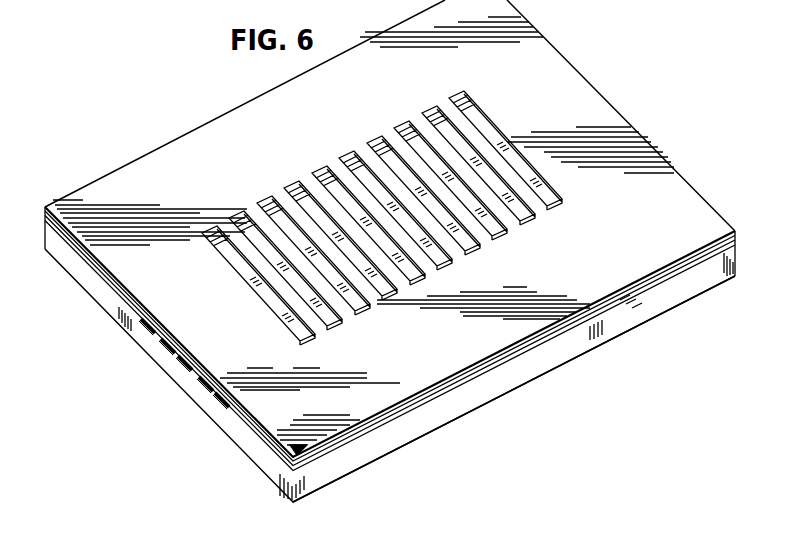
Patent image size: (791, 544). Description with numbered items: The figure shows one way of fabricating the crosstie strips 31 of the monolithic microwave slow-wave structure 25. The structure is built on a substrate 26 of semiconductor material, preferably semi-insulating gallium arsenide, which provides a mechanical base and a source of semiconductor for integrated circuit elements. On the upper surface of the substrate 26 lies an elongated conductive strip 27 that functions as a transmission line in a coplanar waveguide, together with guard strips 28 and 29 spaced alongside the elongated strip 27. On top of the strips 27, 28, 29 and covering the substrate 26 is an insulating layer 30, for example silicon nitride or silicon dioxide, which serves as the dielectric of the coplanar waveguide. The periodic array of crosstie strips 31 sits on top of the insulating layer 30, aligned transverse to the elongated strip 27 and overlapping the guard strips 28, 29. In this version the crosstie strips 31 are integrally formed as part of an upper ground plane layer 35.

The monolithic microwave slow-wave structure 25 is at (590, 53).
The substrate 26 is at (623, 320).
The elongated conductive strip 27 is at (167, 357).
The guard strip 28 is at (112, 295).
The guard strip 29 is at (230, 413).
The insulating layer 30 is at (50, 227).
The crosstie strips 31 is at (293, 206).
The upper ground plane layer 35 is at (654, 173).